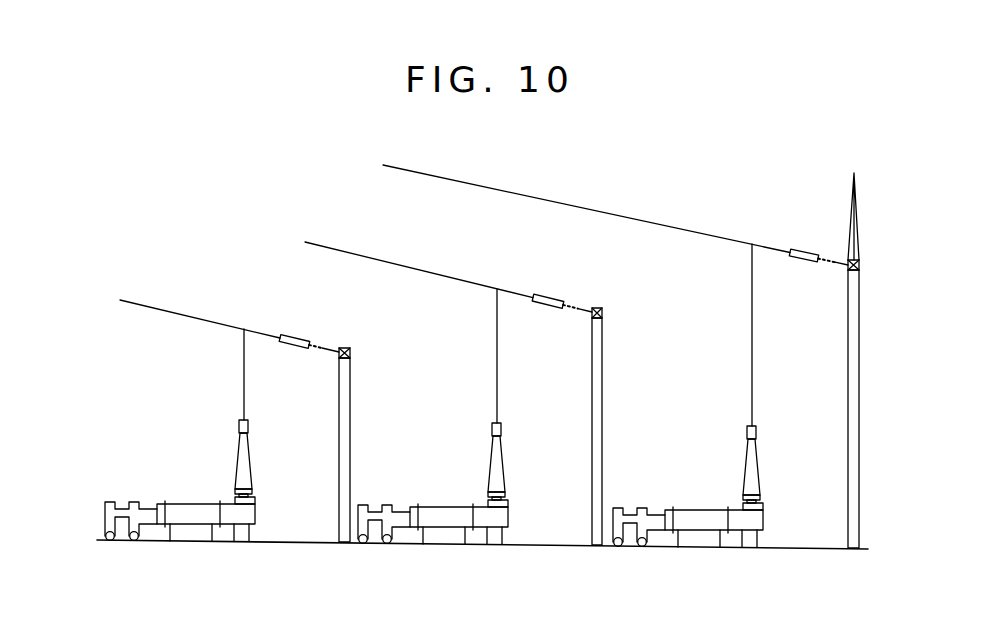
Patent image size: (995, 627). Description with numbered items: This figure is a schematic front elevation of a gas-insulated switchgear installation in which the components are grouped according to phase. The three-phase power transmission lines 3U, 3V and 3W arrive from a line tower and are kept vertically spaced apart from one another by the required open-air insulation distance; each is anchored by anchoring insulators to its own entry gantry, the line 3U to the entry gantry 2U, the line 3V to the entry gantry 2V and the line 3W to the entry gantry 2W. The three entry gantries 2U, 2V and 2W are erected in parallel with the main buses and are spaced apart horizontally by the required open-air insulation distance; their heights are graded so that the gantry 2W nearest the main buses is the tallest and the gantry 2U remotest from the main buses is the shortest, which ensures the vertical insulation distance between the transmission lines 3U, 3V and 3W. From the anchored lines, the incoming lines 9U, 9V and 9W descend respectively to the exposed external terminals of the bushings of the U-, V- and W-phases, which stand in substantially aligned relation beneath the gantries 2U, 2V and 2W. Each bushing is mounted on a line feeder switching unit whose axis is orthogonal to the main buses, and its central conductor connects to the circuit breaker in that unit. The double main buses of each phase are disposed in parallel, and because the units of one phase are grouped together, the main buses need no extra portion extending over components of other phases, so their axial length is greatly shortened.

The power transmission line of U-phase 3U is at (226, 326).
The power transmission line of V-phase 3V is at (433, 275).
The power transmission line of W-phase 3W is at (613, 210).
The incoming line of U-phase 9U is at (244, 368).
The incoming line of V-phase 9V is at (497, 330).
The incoming line of W-phase 9W is at (753, 292).
The entry gantry of U-phase 2U is at (339, 392).
The entry gantry of V-phase 2V is at (592, 395).
The entry gantry of W-phase 2W is at (848, 400).